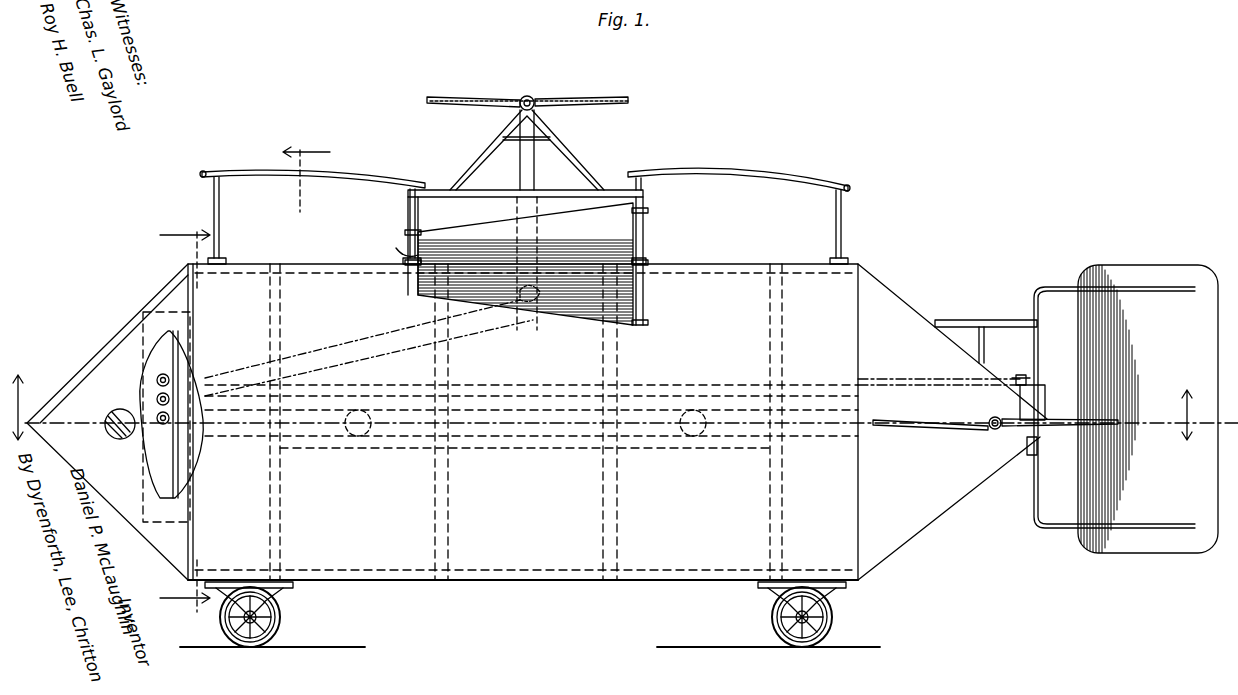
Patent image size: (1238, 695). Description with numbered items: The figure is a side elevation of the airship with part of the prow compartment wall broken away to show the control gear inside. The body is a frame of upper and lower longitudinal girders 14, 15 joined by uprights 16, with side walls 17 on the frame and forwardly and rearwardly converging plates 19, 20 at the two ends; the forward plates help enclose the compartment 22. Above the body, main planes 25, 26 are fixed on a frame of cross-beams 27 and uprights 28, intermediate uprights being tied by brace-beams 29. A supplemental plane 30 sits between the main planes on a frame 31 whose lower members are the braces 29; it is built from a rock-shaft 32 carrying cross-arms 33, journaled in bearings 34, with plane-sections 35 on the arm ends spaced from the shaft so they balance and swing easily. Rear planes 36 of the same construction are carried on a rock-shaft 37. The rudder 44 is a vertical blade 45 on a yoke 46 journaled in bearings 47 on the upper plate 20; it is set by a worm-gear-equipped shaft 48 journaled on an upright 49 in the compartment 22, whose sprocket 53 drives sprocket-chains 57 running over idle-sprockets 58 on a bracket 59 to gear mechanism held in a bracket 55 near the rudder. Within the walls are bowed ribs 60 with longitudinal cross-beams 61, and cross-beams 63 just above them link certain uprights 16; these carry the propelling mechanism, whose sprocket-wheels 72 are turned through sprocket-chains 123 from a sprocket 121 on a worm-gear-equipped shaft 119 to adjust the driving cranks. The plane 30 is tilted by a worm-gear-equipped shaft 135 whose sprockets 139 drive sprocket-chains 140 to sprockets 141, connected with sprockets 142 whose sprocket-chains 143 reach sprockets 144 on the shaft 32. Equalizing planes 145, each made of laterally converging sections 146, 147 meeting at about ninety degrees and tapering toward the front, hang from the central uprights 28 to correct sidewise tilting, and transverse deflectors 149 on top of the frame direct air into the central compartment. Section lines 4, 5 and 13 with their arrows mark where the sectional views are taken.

The section line 4 is at (620, 407).
The irregular section line 5 is at (185, 418).
The section line 13 is at (306, 168).
The upper longitudinally-extending girder 14 is at (749, 276).
The lower longitudinally-extending girder 15 is at (720, 572).
The uprights 16 is at (618, 370).
The side walls 17 is at (556, 560).
The forwardly converging plates 19 is at (92, 355).
The rearwardly converging plates 20 is at (912, 312).
The compartment 22 is at (166, 417).
The main plane 25 is at (340, 165).
The main plane 26 is at (745, 170).
The cross-beams 27 is at (226, 258).
The uprights 28 is at (220, 218).
The brace-beams 29 is at (573, 190).
The supplemental plane 30 is at (548, 100).
The frame 31 is at (565, 140).
The rock-shaft 32 is at (527, 95).
The cross-arms 33 is at (605, 108).
The bearings 34 is at (517, 110).
The plane-sections 35 is at (443, 97).
The planes 36 is at (970, 428).
The rock-shaft 37 is at (1000, 430).
The rudder 44 is at (1187, 378).
The vertically-disposed blade 45 is at (1165, 262).
The yoke 46 is at (1038, 365).
The bearings 47 is at (993, 320).
The worm-gear-equipped shaft 48 is at (157, 416).
The upright 49 is at (180, 353).
The sprocket 53 is at (128, 440).
The bracket 55 is at (1045, 390).
The sprocket-chains 57 is at (912, 380).
The idle-sprockets 58 is at (1020, 375).
The bracket 59 is at (1030, 400).
The outwardly-bowed ribs 60 is at (283, 557).
The cross-beams 61 is at (412, 450).
The cross-beams 63 is at (338, 392).
The sprocket-wheels 72 is at (360, 438).
The worm-gear-equipped shaft 119 is at (170, 420).
The sprocket 121 is at (162, 428).
The sprocket-chains 123 is at (318, 438).
The worm-gear-equipped shaft 135 is at (158, 378).
The sprockets 139 is at (157, 398).
The sprocket-chains 140 is at (406, 328).
The sprockets 141 is at (515, 300).
The sprockets 142 is at (540, 300).
The sprocket-chains 143 is at (515, 203).
The sprockets 144 is at (520, 100).
The equalizing planes 145 is at (600, 255).
The plane-section 146 is at (633, 300).
The plane-section 147 is at (620, 222).
The deflectors 149 is at (420, 245).